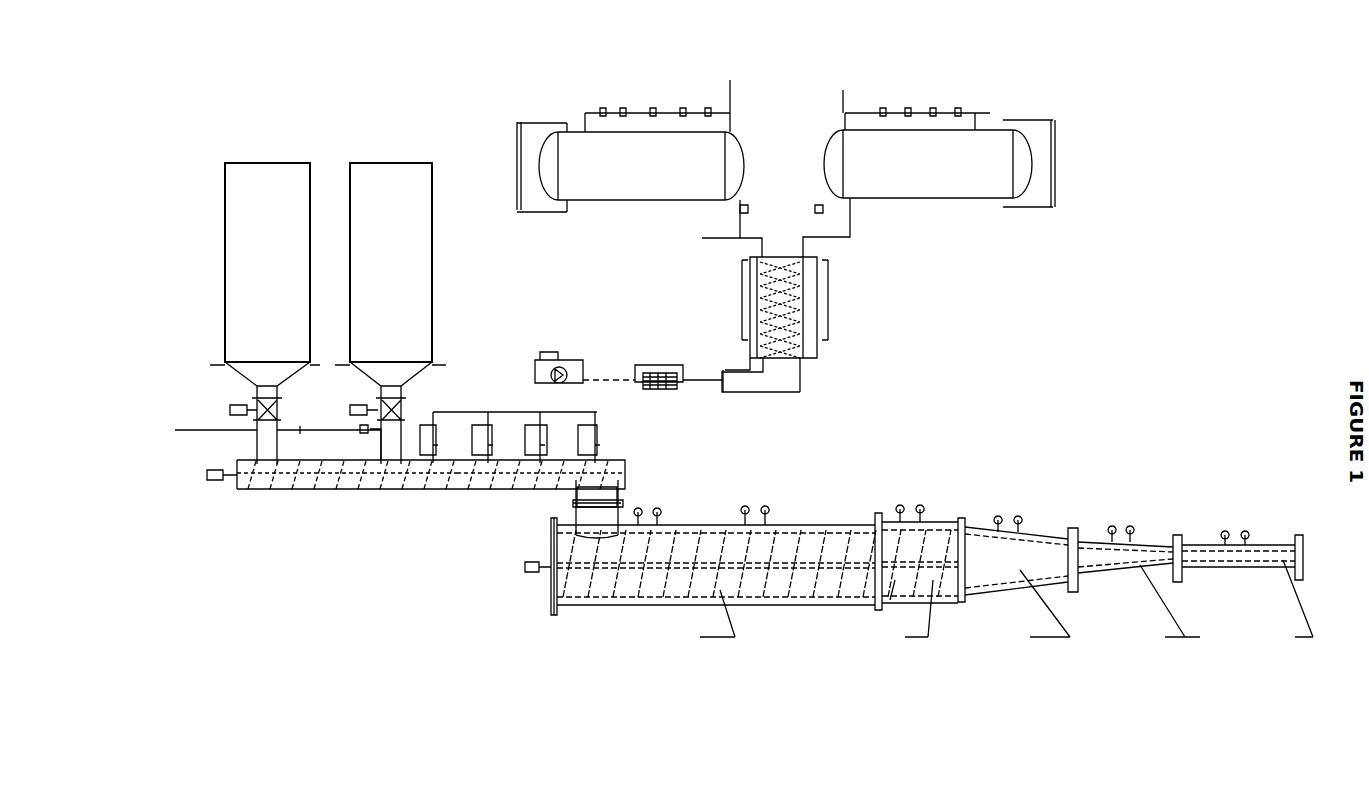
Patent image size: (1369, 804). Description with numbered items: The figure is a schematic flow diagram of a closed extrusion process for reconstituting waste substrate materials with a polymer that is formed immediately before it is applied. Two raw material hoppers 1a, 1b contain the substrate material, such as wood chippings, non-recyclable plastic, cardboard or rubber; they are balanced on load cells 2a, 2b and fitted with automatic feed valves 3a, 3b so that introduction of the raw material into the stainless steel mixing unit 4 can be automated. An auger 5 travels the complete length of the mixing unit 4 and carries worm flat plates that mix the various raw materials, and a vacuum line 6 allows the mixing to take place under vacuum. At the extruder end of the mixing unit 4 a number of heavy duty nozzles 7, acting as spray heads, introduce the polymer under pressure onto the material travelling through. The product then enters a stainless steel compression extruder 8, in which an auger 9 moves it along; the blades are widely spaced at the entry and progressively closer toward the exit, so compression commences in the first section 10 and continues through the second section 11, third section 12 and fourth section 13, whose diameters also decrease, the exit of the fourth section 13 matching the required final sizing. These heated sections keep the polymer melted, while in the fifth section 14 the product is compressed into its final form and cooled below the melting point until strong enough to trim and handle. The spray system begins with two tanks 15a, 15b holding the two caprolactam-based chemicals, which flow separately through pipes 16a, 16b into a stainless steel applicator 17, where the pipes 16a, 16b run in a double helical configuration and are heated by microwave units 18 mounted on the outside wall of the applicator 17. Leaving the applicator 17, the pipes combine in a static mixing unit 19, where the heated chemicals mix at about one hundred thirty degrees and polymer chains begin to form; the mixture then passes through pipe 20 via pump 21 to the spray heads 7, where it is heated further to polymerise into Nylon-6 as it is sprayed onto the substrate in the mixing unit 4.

The raw material hopper 1a is at (265, 165).
The raw material hopper 1b is at (383, 163).
The load cell 2a is at (210, 362).
The load cell 2b is at (435, 348).
The automatic feed valve 3a is at (240, 425).
The automatic feed valve 3b is at (393, 425).
The mixing unit 4 is at (318, 480).
The auger 5 is at (478, 470).
The vacuum line 6 is at (263, 440).
The heavy duty nozzles 7 is at (580, 437).
The compression extruder 8 is at (550, 595).
The auger 9 is at (622, 560).
The first section 10 is at (765, 585).
The second section 11 is at (938, 510).
The third section 12 is at (1023, 532).
The fourth section 13 is at (1113, 545).
The fifth section 14 is at (1223, 567).
The tank 15a is at (632, 152).
The tank 15b is at (905, 147).
The pipe 16a is at (788, 419).
The pipe 16b is at (752, 368).
The applicator 17 is at (793, 307).
The microwave units 18 is at (845, 353).
The static mixing unit 19 is at (650, 365).
The pipe 20 is at (602, 380).
The pump 21 is at (553, 356).